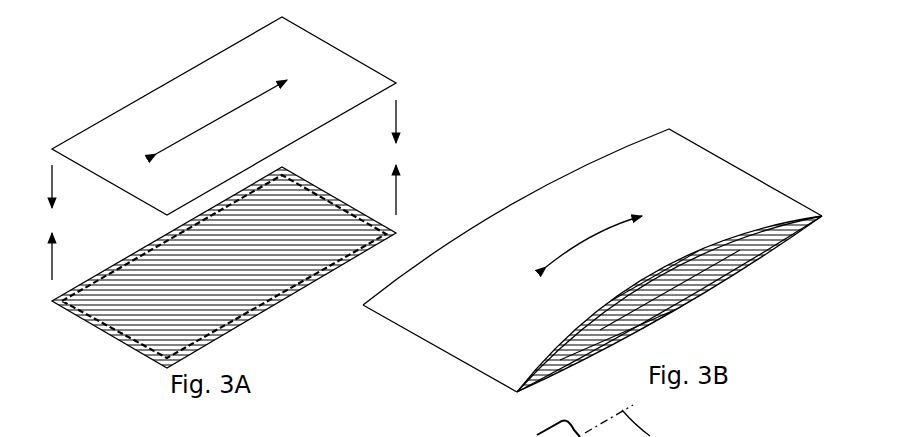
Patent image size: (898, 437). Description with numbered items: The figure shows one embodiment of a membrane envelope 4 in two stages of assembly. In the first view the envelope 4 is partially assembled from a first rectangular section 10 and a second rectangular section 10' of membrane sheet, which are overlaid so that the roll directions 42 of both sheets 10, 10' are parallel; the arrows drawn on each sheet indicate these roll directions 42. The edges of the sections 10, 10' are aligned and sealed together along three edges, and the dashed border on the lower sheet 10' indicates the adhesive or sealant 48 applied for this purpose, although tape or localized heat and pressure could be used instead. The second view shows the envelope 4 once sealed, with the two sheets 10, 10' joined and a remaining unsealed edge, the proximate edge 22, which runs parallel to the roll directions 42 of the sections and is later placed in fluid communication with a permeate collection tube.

In FIG. 3A, the membrane envelope 4 is at (114, 92).
In FIG. 3B, the membrane envelope 4 is at (727, 105).
In FIG. 3A, the first rectangular section of membrane sheet 10 is at (224, 116).
In FIG. 3B, the first rectangular section of membrane sheet 10 is at (592, 260).
In FIG. 3A, the second rectangular section of membrane sheet 10' is at (224, 267).
In FIG. 3A, the roll direction 42 is at (220, 117).
In FIG. 3B, the roll direction 42 is at (590, 237).
In FIG. 3A, the adhesive or sealant 48 is at (315, 195).
In FIG. 3B, the proximate edge 22 is at (740, 290).